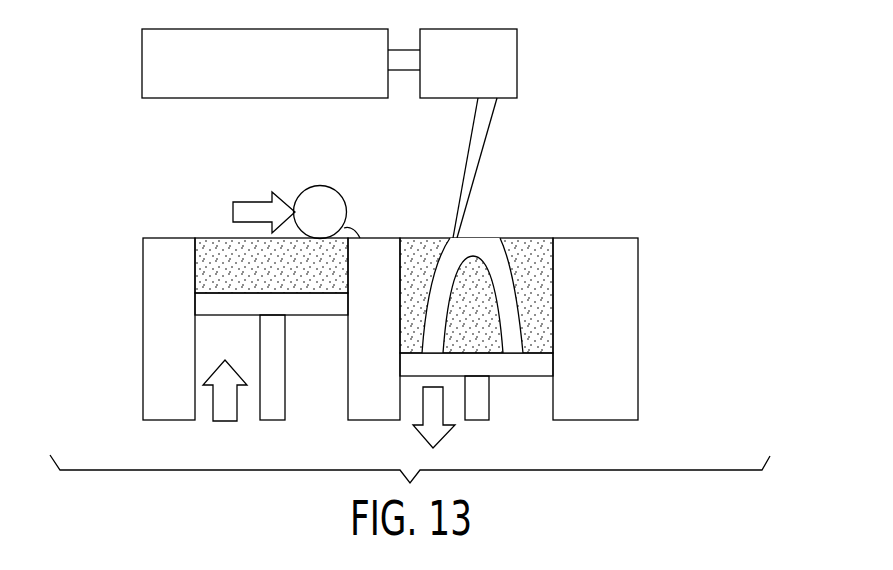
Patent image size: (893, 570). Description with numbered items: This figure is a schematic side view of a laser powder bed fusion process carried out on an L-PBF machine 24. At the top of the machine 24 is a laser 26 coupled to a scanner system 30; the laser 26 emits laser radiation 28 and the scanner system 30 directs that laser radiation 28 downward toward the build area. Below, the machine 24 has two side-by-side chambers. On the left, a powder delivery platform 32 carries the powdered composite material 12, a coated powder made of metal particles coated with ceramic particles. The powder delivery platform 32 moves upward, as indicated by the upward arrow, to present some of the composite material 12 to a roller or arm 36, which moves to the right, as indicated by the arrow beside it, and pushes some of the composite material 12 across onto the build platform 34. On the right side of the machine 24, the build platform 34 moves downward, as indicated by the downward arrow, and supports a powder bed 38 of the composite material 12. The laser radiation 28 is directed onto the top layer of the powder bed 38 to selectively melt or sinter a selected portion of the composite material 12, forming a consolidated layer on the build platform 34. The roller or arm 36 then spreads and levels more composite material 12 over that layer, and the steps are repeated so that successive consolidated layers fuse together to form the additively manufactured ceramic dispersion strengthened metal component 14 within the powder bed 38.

The powdered composite material 12 is at (228, 258).
The additively manufactured ceramic dispersion strengthened metal component 14 is at (493, 250).
The L-PBF machine 24 is at (672, 64).
The laser 26 is at (322, 98).
The laser radiation 28 is at (482, 117).
The scanner system 30 is at (517, 63).
The powder delivery platform 32 is at (300, 303).
The build platform 34 is at (508, 367).
The roller or arm 36 is at (312, 197).
The powder bed 38 is at (422, 253).